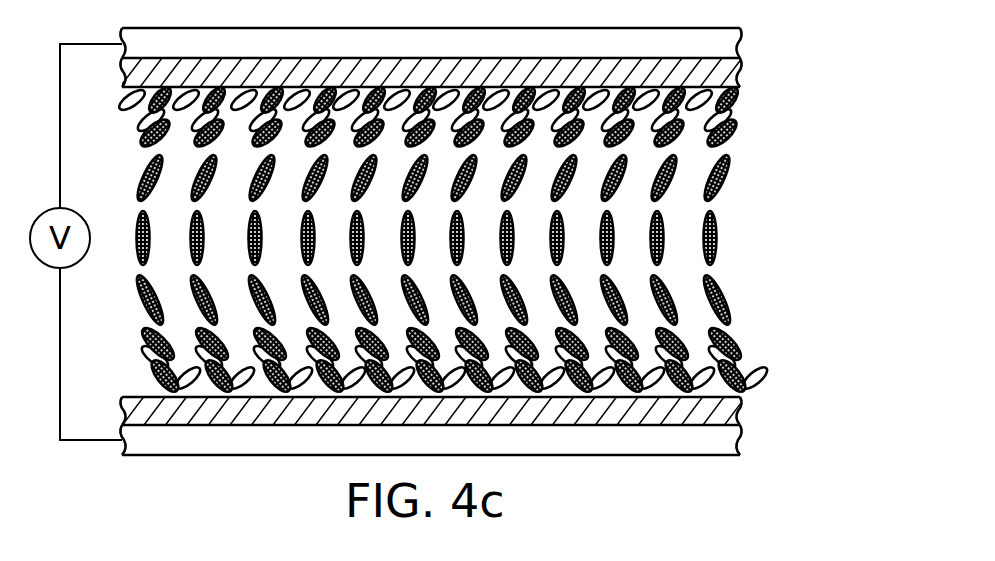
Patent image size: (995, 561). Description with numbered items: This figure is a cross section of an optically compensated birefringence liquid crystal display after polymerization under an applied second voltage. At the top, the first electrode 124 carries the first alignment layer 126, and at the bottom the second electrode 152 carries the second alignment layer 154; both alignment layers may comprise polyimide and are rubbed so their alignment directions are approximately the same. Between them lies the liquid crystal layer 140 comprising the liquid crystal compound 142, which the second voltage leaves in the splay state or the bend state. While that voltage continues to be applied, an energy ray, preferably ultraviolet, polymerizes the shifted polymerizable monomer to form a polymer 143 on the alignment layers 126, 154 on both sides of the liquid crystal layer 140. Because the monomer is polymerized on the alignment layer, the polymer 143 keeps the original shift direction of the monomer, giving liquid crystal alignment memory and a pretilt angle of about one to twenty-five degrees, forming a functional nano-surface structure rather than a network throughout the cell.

The first electrode 124 is at (724, 39).
The first alignment layer 126 is at (724, 68).
The liquid crystal layer 140 is at (508, 240).
The liquid crystal compound 142 is at (816, 388).
The polymer 143 is at (727, 107).
The second electrode 152 is at (727, 437).
The second alignment layer 154 is at (727, 407).